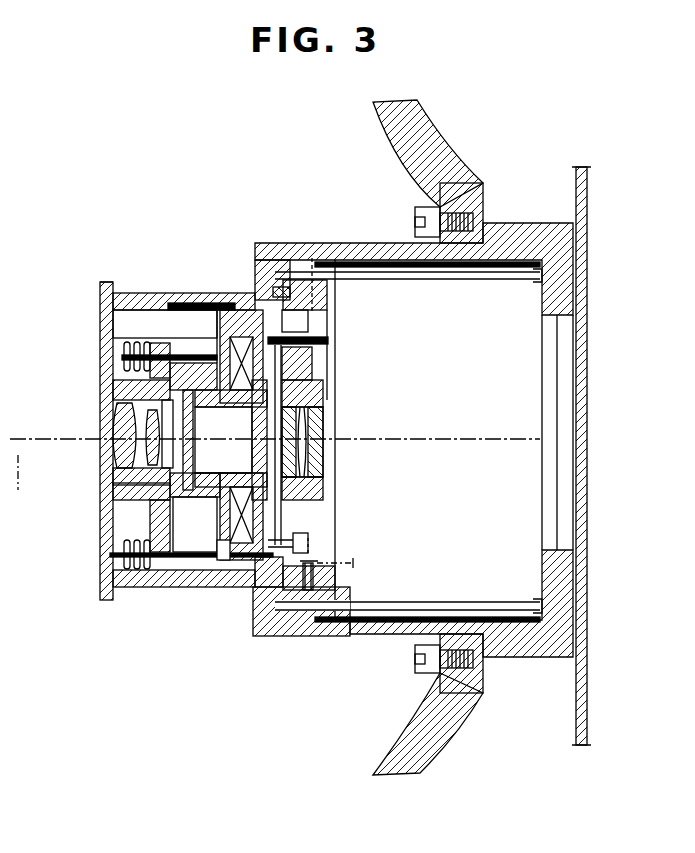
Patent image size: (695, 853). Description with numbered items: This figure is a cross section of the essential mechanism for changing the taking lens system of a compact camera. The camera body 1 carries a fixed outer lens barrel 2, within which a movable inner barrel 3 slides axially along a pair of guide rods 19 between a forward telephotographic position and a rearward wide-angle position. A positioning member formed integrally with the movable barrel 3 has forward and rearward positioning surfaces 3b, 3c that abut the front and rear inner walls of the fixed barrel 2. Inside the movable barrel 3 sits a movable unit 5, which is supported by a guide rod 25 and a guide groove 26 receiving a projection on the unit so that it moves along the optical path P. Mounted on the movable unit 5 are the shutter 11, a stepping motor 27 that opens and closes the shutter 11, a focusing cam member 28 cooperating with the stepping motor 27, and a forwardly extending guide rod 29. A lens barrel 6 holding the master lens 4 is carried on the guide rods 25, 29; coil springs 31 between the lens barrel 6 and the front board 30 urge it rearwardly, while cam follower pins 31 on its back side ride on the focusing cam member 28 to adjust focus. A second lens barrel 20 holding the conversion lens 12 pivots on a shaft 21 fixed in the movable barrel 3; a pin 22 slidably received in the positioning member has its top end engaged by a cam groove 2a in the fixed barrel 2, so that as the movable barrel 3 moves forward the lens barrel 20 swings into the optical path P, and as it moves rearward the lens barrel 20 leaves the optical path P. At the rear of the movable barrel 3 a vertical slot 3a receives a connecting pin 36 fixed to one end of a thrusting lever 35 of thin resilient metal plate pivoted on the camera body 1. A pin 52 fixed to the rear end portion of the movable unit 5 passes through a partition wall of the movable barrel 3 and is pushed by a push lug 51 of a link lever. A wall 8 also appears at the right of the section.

The camera body 1 is at (437, 142).
The fixed outer lens barrel 2 is at (290, 638).
The cam groove 2a is at (352, 243).
The movable inner barrel 3 is at (135, 588).
The vertical slot 3a is at (312, 600).
The forward positioning surface 3b is at (282, 258).
The rearward positioning surface 3c is at (337, 291).
The taking lens system 4 is at (112, 455).
The movable unit 5 is at (208, 330).
The lens barrel 6 is at (118, 492).
The wall 8 is at (590, 205).
The shutter 11 is at (252, 461).
The conversion lens 12 is at (324, 418).
The guide rods 19 is at (484, 283).
The lens barrel 20 is at (319, 483).
The shaft 21 is at (328, 342).
The pin 22 is at (312, 321).
The guide rod 25 is at (196, 571).
The guide groove 26 is at (195, 307).
The stepping motor 27 is at (242, 540).
The focusing cam member 28 is at (195, 512).
The guide rod 29 is at (188, 350).
The front board 30 is at (100, 313).
The coil springs 31 is at (112, 342).
The thrusting lever 35 is at (354, 562).
The connecting pin 36 is at (314, 582).
The push lug 51 is at (310, 536).
The pin 52 is at (294, 533).
The optical path P is at (13, 482).